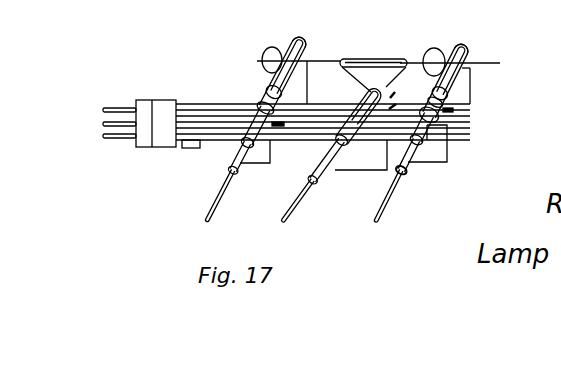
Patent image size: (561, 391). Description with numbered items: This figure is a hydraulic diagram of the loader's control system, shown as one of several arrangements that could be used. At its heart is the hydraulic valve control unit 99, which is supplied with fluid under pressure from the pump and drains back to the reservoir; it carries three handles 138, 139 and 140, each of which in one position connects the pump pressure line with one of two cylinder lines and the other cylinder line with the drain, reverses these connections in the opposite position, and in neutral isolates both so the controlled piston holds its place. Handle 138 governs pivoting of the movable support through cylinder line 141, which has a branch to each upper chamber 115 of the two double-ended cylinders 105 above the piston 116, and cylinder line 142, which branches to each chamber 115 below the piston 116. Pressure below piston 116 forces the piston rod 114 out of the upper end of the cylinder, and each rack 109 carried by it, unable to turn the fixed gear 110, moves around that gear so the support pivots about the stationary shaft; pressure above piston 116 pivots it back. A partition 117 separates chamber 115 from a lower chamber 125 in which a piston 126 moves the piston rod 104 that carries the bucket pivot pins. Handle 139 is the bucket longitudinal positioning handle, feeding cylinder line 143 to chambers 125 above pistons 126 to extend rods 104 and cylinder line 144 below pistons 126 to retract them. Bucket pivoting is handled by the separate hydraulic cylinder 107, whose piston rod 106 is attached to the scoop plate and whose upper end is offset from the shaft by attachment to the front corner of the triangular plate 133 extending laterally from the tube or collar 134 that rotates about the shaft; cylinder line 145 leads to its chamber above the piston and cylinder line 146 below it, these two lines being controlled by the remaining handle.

The hydraulic valve control unit 99 is at (158, 108).
The handle 138 is at (112, 108).
The handle 140 is at (117, 122).
The handle 139 is at (122, 140).
The cylinder line 141 is at (187, 104).
The cylinder line 142 is at (195, 107).
The cylinder line 145 is at (208, 117).
The tube or collar 134 is at (373, 52).
The triangular plate 133 is at (374, 88).
The fixed gear 110 is at (276, 48).
The rack 109 is at (297, 46).
The piston rod 114 is at (309, 43).
The piston 116 is at (276, 85).
The upper chamber 115 is at (268, 100).
The partition 117 is at (440, 117).
The piston 126 is at (242, 145).
The chamber 125 is at (233, 170).
The piston rod 104 is at (213, 210).
The double-ended cylinder 105 is at (404, 175).
The hydraulic cylinder 107 is at (319, 179).
The piston rod 106 is at (288, 215).
The cylinder line 143 is at (188, 143).
The cylinder line 144 is at (191, 160).
The cylinder line 146 is at (198, 150).